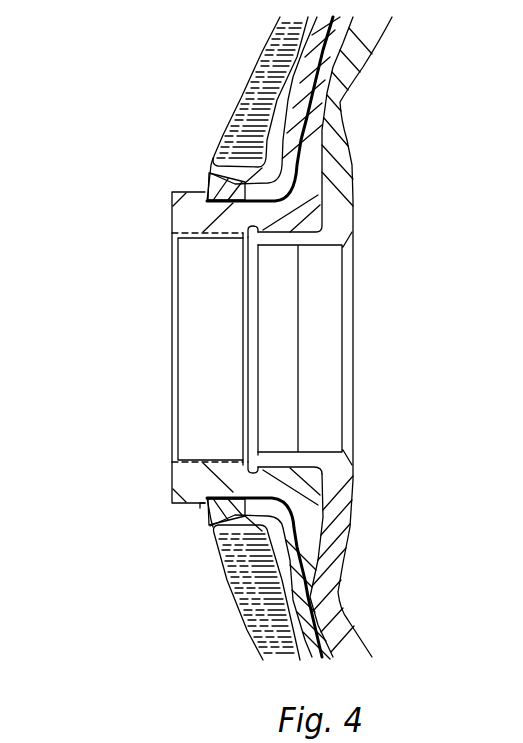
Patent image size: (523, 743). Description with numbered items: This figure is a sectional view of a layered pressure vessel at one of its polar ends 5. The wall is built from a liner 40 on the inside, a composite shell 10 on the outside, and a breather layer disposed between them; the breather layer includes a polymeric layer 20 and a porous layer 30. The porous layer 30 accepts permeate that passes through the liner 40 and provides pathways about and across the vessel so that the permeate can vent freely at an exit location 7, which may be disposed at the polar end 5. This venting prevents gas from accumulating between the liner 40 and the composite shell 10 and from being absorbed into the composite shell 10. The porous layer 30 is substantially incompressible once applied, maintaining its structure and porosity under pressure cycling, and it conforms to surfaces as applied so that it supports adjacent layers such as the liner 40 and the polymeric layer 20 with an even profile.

The polar end 5 is at (198, 355).
The exit location 7 is at (195, 514).
The composite shell 10 is at (262, 98).
The polymeric layer 20 is at (217, 160).
The porous layer 30 is at (210, 197).
The liner 40 is at (342, 170).